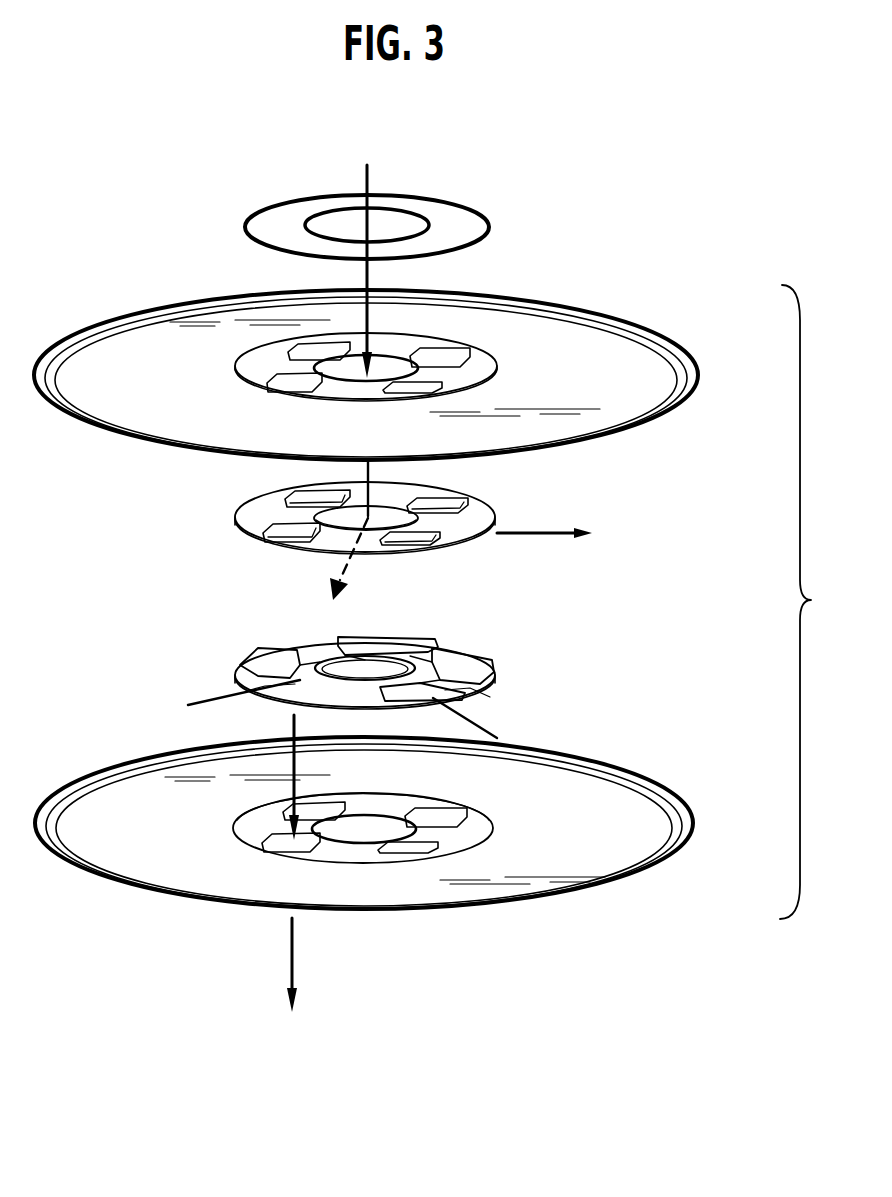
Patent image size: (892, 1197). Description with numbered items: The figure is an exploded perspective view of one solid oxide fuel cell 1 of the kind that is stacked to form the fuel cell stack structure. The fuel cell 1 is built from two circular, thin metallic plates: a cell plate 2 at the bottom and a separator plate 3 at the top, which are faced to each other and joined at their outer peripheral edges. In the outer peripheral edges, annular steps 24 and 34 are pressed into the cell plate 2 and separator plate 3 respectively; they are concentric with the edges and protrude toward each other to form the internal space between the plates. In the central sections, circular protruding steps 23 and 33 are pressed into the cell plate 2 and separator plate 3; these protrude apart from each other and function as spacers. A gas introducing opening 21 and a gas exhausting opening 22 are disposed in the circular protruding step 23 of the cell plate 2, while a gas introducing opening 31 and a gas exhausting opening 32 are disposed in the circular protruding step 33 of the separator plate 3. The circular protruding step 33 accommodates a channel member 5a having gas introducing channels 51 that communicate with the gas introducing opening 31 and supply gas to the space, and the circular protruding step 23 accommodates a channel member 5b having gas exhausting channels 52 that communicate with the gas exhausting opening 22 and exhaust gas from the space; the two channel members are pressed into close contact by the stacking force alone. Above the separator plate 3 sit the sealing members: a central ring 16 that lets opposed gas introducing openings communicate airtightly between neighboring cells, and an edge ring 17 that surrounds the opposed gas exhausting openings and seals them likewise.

The fuel cell 1 is at (807, 602).
The cell plate 2 is at (670, 863).
The separator plate 3 is at (683, 343).
The channel member 5a is at (483, 502).
The channel member 5b is at (258, 652).
The central ring 16 is at (318, 213).
The edge ring 17 is at (457, 202).
The gas introducing opening 21 is at (348, 842).
The gas exhausting opening 22 is at (447, 818).
The circular protruding step 23 is at (487, 843).
The annular step 24 is at (680, 800).
The gas introducing opening 31 is at (340, 355).
The gas exhausting opening 32 is at (438, 358).
The circular protruding step 33 is at (497, 370).
The annular step 34 is at (647, 423).
The gas introducing channel 51 is at (378, 512).
The gas exhausting channel 52 is at (447, 707).